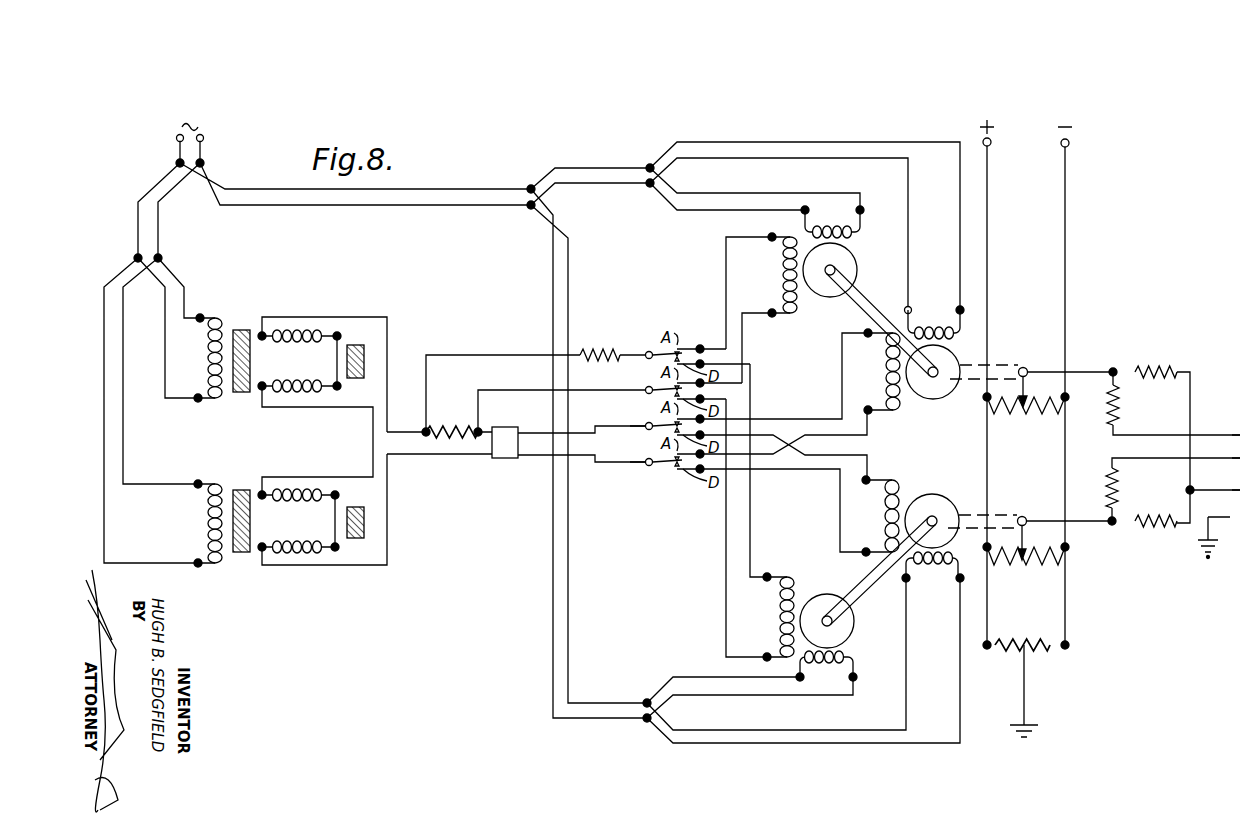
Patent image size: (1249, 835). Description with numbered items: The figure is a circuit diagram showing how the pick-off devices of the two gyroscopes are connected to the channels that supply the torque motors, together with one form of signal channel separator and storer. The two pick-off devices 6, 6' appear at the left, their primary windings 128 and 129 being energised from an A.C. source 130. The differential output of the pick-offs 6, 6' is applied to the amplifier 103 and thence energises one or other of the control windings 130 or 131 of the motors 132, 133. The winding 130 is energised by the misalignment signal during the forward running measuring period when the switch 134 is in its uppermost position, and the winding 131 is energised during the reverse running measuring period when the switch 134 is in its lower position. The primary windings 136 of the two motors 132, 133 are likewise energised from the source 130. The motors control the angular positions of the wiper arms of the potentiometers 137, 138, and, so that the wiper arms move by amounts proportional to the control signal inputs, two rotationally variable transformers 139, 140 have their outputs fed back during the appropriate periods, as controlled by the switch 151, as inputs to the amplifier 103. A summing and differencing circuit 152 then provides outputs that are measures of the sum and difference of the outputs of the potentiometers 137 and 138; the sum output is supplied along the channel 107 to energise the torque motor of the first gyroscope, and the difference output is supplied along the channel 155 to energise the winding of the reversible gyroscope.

The A.C. source 130 is at (203, 139).
The primary winding 128 is at (212, 322).
The primary winding 129 is at (212, 488).
The pick-off device 6 is at (310, 393).
The pick-off device 6' is at (310, 509).
The amplifier 103 is at (509, 452).
The switch 151 is at (660, 360).
The switch 134 is at (601, 440).
The rotationally variable transformer 139 is at (845, 263).
The motor 132 is at (936, 392).
The primary winding 136 is at (950, 327).
The potentiometer 137 is at (1043, 358).
The potentiometer 138 is at (1043, 510).
The summing and differencing circuit 152 is at (1166, 363).
The channel 107 is at (1228, 425).
The channel 155 is at (1224, 503).
The motor 133 is at (948, 490).
The control winding 131 is at (886, 520).
The rotationally variable transformer 140 is at (838, 588).